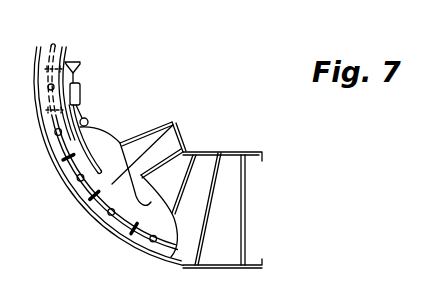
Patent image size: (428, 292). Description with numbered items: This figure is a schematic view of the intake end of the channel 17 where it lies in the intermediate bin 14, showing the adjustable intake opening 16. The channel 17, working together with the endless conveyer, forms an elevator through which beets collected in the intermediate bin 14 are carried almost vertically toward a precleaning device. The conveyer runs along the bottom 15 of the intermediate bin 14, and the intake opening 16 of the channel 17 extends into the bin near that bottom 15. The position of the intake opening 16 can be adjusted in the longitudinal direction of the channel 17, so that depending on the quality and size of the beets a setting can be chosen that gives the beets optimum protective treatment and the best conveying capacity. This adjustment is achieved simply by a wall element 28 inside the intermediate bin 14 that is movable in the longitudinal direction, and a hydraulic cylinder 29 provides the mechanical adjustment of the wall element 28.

The intermediate bin 14 is at (192, 185).
The bottom 15 is at (93, 217).
The intake opening 16 is at (120, 223).
The channel 17 is at (67, 63).
The wall element 28 is at (174, 122).
The hydraulic cylinder 29 is at (82, 98).